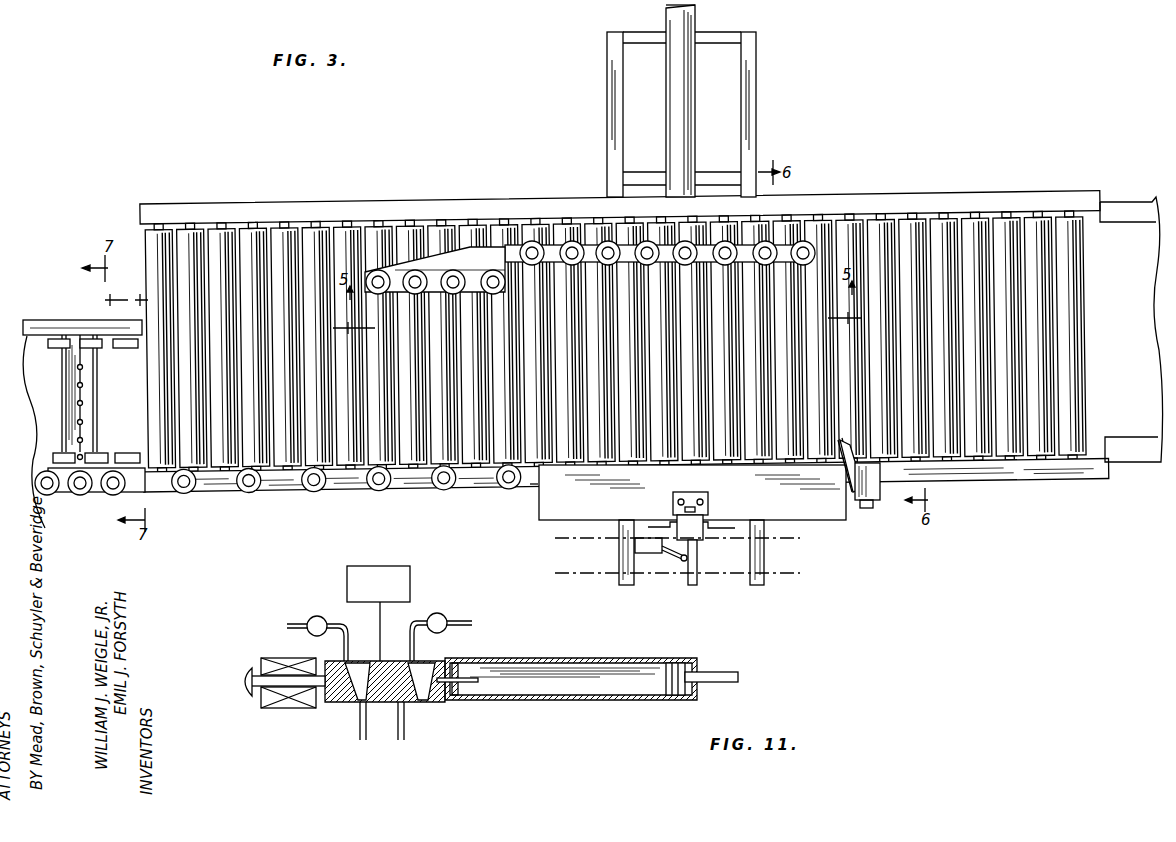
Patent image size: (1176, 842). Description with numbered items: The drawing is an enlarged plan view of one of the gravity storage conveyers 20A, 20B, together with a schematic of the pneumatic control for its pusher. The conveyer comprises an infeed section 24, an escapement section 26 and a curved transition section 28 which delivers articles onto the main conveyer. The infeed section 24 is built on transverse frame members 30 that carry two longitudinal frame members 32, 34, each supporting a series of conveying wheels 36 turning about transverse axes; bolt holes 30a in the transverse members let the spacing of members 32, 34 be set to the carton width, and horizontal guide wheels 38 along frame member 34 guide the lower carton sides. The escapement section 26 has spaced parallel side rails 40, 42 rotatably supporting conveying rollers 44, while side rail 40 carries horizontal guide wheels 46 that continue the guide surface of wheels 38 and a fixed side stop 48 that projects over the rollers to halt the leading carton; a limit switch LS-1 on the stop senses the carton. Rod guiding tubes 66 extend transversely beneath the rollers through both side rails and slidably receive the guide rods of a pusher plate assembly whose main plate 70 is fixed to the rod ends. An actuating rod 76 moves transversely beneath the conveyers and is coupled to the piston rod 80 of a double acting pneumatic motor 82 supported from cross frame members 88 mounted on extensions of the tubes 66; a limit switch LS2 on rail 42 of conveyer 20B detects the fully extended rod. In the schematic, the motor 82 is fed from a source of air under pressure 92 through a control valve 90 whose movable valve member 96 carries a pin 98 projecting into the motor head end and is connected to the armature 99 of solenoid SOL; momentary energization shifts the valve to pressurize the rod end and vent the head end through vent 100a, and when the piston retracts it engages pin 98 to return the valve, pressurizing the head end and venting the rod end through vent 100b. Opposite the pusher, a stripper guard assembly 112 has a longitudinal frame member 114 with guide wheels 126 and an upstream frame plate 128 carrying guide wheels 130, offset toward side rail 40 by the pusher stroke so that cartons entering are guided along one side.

In FIG. 3, the side rail 42 is at (330, 205).
In FIG. 3, the escapement section 26 is at (624, 335).
In FIG. 3, the conveying rollers 44 is at (1005, 228).
In FIG. 3, the curved transition section 28 is at (1113, 210).
In FIG. 3, the side rail 40 is at (395, 492).
In FIG. 3, the horizontal guide wheels 46 is at (240, 494).
In FIG. 3, the rod guiding tubes 66 is at (612, 134).
In FIG. 3, the cross frame members 88 is at (720, 33).
In FIG. 3, the pneumatic motor 82 is at (690, 88).
In FIG. 11, the pneumatic motor 82 is at (570, 655).
In FIG. 3, the control valve 90 is at (667, 15).
In FIG. 11, the control valve 90 is at (337, 708).
In FIG. 3, the longitudinal frame member 114 is at (546, 242).
In FIG. 3, the frame plate 128 is at (470, 250).
In FIG. 3, the stripper guard assembly 112 is at (480, 262).
In FIG. 3, the guide wheels 126 is at (572, 277).
In FIG. 3, the guide wheels 130 is at (490, 293).
In FIG. 3, the longitudinal frame member 32 is at (42, 322).
In FIG. 3, the transverse frame members 30 is at (97, 410).
In FIG. 3, the bolt holes 30a is at (84, 400).
In FIG. 3, the conveying wheels 36 is at (76, 345).
In FIG. 3, the longitudinal frame member 34 is at (128, 492).
In FIG. 3, the horizontal guide wheels 38 is at (80, 496).
In FIG. 3, the infeed section 24 is at (59, 294).
In FIG. 3, the main plate 70 is at (818, 520).
In FIG. 3, the actuating rod 76 is at (697, 578).
In FIG. 3, the limit switch LS2 is at (652, 553).
In FIG. 3, the limit switch LS-1 is at (880, 500).
In FIG. 3, the fixed side stop 48 is at (840, 462).
In FIG. 3, the storage conveyer 20A is at (532, 495).
In FIG. 3, the storage conveyer 20B is at (542, 535).
In FIG. 11, the source of air under pressure 92 is at (408, 568).
In FIG. 11, the vent 100b is at (345, 615).
In FIG. 11, the vent 100a is at (420, 614).
In FIG. 11, the solenoid SOL is at (268, 640).
In FIG. 11, the armature 99 is at (252, 688).
In FIG. 11, the movable valve member 96 is at (452, 668).
In FIG. 11, the pin 98 is at (478, 678).
In FIG. 11, the piston rod 80 is at (718, 672).